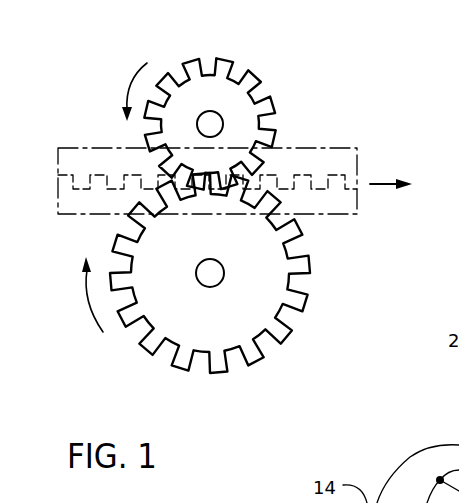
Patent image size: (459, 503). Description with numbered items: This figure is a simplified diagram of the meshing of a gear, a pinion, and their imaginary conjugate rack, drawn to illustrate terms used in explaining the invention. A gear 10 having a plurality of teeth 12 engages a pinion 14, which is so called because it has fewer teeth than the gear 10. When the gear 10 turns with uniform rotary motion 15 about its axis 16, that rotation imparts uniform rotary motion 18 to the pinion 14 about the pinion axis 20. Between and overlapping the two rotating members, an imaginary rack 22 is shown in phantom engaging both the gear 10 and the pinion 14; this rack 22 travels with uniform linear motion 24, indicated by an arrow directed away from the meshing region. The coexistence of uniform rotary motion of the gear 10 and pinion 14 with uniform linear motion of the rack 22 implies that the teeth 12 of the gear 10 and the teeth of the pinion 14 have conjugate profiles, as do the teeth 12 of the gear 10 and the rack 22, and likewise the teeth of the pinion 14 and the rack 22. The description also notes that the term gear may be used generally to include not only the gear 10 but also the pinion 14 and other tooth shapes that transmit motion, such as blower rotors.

The gear 10 is at (210, 300).
The teeth 12 is at (228, 57).
The pinion 14 is at (224, 111).
The uniform rotary motion 15 is at (90, 311).
The axis 16 is at (205, 282).
The uniform rotary motion 18 is at (118, 93).
The pinion axis 20 is at (208, 120).
The imaginary rack 22 is at (358, 175).
The uniform linear motion 24 is at (377, 181).